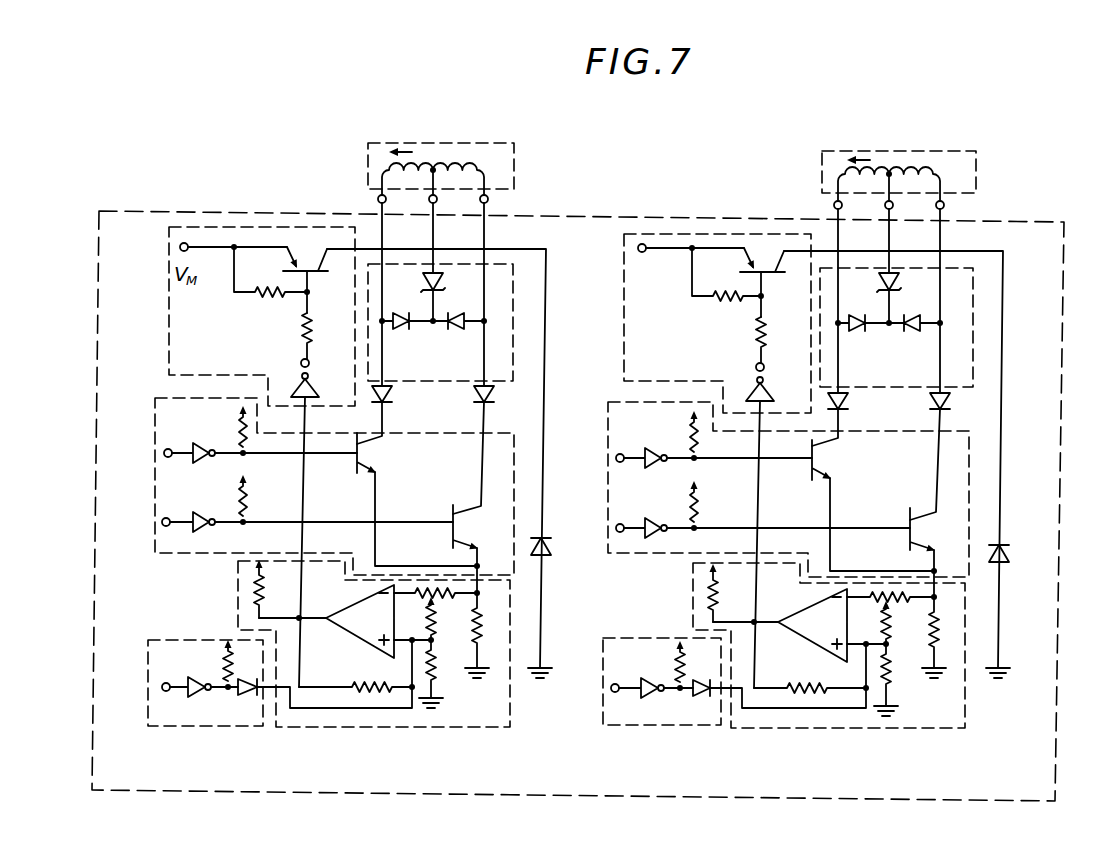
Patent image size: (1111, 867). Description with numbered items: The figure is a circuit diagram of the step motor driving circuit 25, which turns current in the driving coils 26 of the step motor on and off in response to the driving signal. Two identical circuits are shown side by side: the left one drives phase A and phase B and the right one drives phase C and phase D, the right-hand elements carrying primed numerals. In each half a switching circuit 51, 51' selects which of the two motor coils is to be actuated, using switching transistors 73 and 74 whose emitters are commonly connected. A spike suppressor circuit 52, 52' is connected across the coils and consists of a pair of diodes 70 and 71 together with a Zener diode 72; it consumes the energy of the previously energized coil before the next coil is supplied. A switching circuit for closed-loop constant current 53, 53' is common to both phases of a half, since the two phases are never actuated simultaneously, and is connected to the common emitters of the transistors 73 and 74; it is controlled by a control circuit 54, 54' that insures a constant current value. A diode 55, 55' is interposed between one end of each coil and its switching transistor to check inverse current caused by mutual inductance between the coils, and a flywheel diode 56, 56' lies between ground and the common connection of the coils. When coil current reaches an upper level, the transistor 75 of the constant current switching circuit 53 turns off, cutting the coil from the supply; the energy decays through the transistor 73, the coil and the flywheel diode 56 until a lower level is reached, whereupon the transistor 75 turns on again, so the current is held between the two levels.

The driving circuit 25 is at (1068, 381).
The driving coils 26 is at (514, 172).
The switching circuit 51 is at (351, 486).
The switching circuit 51' is at (826, 489).
The spike suppressor circuit 52 is at (455, 326).
The spike suppressor circuit 52' is at (931, 327).
The switching circuit for closed-loop constant current 53 is at (362, 466).
The switching circuit for closed-loop constant current 53' is at (820, 463).
The control circuit 54 is at (205, 702).
The control circuit 54' is at (666, 702).
The diode 55 is at (433, 403).
The diode 55' is at (889, 385).
The flywheel diode 56 is at (559, 564).
The flywheel diode 56' is at (1019, 568).
The diode 70 is at (394, 316).
The diode 71 is at (456, 316).
The Zener diode 72 is at (437, 284).
The switching transistor 73 is at (350, 465).
The switching transistor 74 is at (452, 514).
The transistor 75 is at (311, 281).